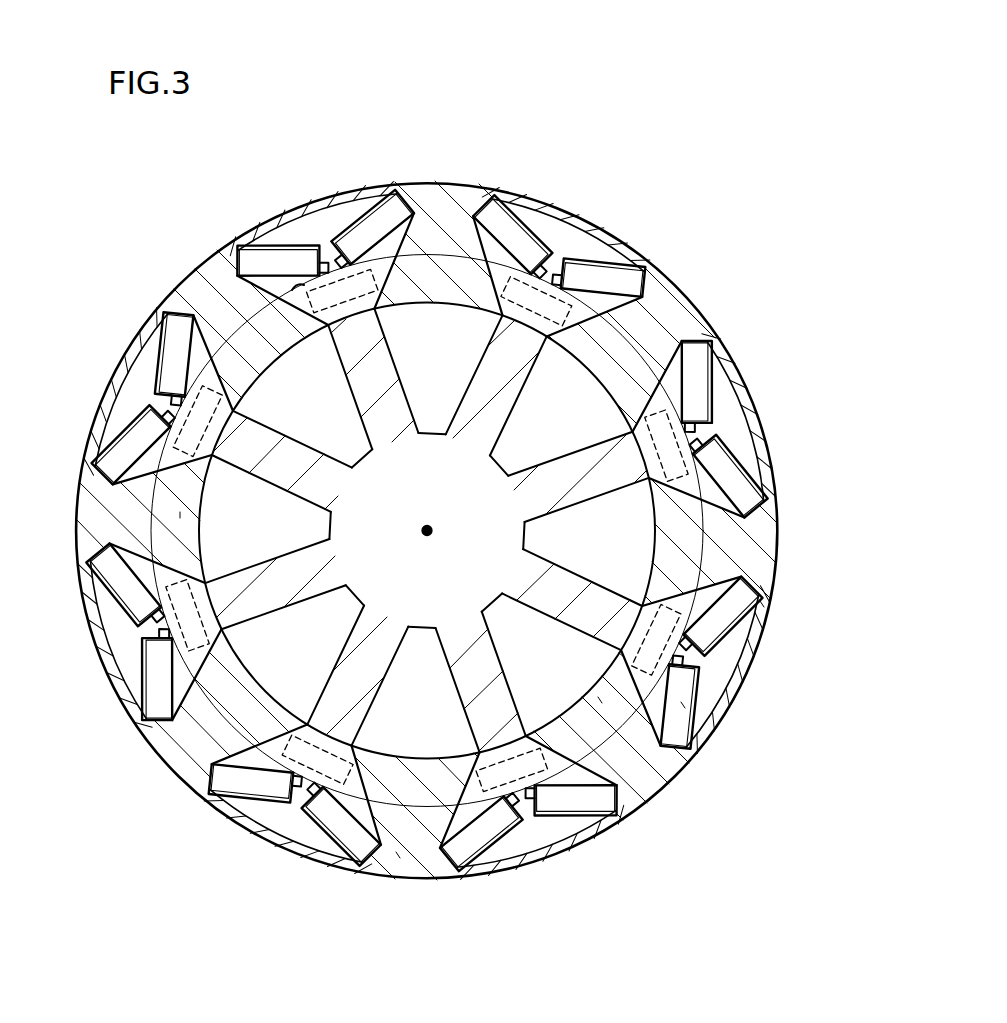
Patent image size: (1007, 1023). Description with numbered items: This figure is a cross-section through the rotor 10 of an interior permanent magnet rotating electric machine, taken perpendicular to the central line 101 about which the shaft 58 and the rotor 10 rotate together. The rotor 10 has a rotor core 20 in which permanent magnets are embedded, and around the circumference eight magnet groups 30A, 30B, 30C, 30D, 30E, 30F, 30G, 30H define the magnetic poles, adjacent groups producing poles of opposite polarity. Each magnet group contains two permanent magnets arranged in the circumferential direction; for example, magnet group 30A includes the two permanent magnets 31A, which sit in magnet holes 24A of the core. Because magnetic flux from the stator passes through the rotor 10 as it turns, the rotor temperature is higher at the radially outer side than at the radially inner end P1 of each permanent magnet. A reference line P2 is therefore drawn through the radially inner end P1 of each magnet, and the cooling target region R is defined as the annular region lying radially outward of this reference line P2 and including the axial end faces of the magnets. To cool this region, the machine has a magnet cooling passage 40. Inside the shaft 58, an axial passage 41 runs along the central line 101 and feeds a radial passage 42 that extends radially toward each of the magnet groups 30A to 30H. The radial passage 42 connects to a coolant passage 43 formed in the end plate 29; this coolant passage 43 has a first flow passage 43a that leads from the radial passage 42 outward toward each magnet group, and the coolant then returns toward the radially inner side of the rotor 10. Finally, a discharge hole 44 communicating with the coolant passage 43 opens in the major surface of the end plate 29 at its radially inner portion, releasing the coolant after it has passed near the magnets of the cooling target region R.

The rotor 10 is at (445, 180).
The rotor core 20 is at (754, 281).
The end plate 29 is at (777, 530).
The magnet group 30A is at (840, 632).
The magnet group 30B is at (521, 852).
The magnet group 30C is at (299, 823).
The magnet group 30D is at (129, 634).
The magnet group 30E is at (91, 401).
The magnet group 30F is at (312, 190).
The magnet group 30G is at (623, 233).
The magnet group 30H is at (770, 399).
The permanent magnet 31A is at (712, 638).
The magnet insertion hole 24A is at (690, 690).
The magnet cooling passage 40 is at (430, 845).
The axial passage 41 is at (180, 515).
The radial passage 42 is at (316, 318).
The coolant passage 43 is at (500, 318).
The first flow passage 43a is at (291, 288).
The discharge hole 44 is at (322, 766).
The shaft 58 is at (640, 555).
The central line 101 is at (434, 530).
The radially inner end P1 is at (762, 604).
The reference line P2 is at (600, 700).
The cooling target region R is at (398, 855).